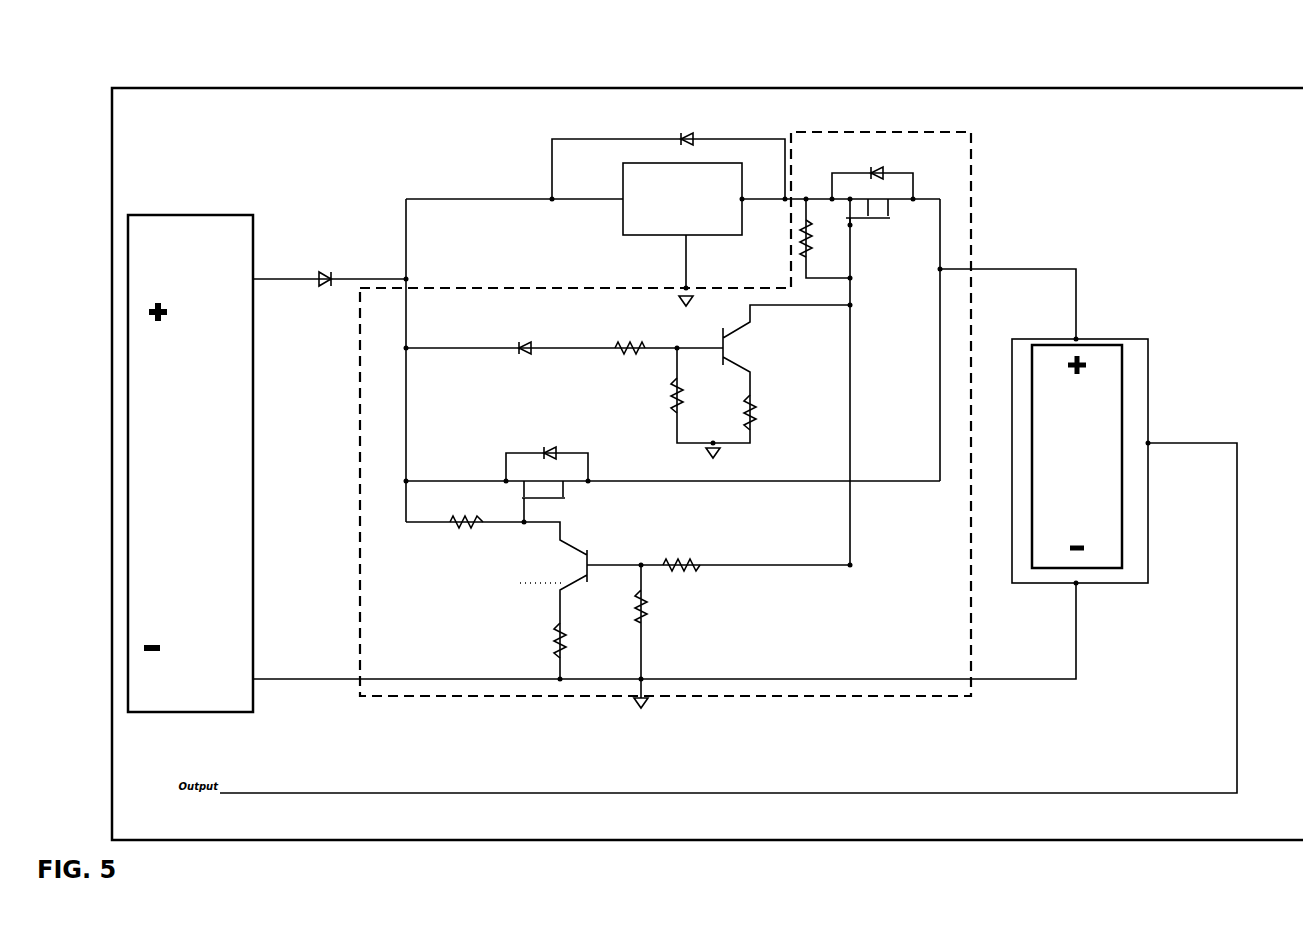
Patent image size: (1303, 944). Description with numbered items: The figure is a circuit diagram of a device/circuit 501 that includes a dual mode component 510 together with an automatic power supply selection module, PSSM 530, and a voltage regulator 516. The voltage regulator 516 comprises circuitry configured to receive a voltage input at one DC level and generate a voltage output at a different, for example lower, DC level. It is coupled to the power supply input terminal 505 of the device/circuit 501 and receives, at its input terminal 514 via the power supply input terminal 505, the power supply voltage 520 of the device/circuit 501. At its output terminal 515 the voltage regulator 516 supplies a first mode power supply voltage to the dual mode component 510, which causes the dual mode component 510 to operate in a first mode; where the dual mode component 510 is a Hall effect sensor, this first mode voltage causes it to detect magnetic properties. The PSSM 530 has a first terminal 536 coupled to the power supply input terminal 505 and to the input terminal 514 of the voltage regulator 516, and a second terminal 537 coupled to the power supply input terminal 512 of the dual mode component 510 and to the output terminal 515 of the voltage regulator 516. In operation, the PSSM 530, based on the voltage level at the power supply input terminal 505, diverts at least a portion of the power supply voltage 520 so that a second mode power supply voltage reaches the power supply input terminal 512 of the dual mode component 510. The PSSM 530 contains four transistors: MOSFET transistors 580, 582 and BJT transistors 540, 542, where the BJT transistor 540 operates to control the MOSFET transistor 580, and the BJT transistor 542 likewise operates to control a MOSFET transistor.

The device/circuit 501 is at (962, 88).
The power supply input terminal 505 is at (190, 463).
The dual mode component 510 is at (1123, 339).
The power supply input terminal 512 is at (1077, 456).
The input terminal 514 is at (585, 196).
The output terminal 515 is at (779, 198).
The voltage regulator 516 is at (668, 219).
The power supply voltage 520 is at (329, 267).
The PSSM 530 is at (973, 183).
The first terminal 536 is at (406, 310).
The second terminal 537 is at (947, 266).
The BJT transistor 540 is at (721, 340).
The BJT transistor 542 is at (588, 566).
The MOSFET transistor 580 is at (895, 222).
The MOSFET transistor 582 is at (560, 498).